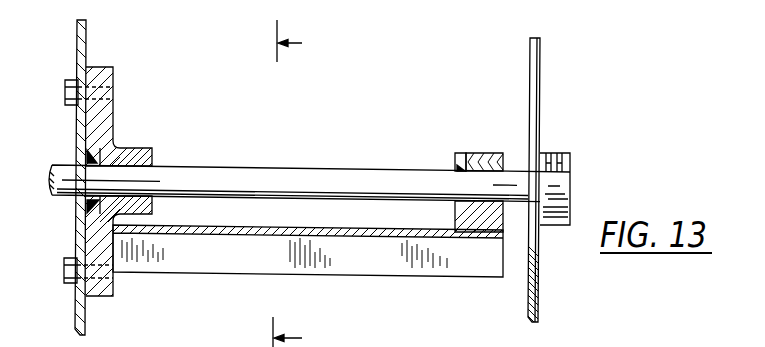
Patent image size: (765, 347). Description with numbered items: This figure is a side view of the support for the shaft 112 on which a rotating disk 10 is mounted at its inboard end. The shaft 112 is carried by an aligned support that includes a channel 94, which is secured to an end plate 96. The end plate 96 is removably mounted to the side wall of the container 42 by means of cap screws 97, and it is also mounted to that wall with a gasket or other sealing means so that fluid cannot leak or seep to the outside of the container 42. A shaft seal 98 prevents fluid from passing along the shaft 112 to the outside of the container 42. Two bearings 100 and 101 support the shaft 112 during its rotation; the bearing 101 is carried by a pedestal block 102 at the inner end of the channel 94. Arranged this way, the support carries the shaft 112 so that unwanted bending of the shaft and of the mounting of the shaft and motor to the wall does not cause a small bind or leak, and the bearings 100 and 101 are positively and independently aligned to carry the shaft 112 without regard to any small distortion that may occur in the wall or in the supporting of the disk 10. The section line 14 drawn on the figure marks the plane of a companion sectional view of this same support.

The disk 10 is at (530, 78).
The section line 14- 14 is at (295, 179).
The container 42 is at (77, 41).
The channel 94 is at (376, 262).
The end plate 96 is at (113, 68).
The cap screws 97 is at (66, 106).
The shaft seal 98 is at (87, 217).
The bearing 100 is at (128, 160).
The bearing 101 is at (463, 153).
The pedestal block 102 is at (485, 153).
The shaft 112 is at (241, 172).